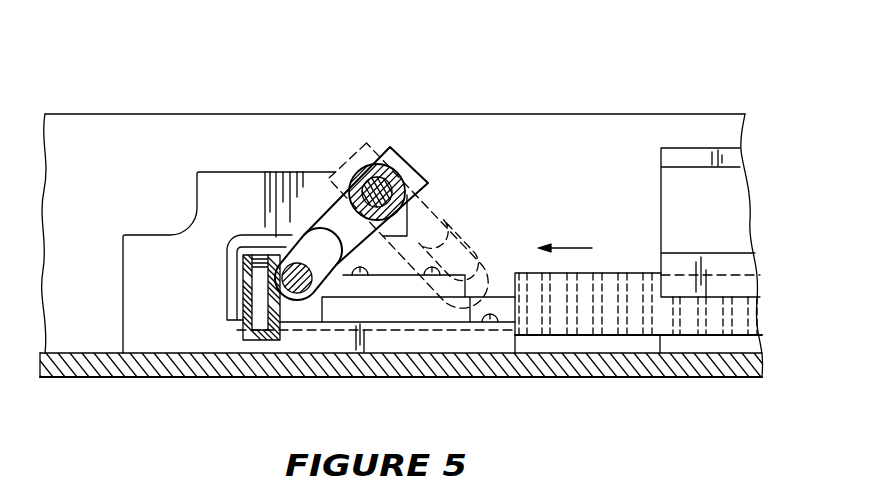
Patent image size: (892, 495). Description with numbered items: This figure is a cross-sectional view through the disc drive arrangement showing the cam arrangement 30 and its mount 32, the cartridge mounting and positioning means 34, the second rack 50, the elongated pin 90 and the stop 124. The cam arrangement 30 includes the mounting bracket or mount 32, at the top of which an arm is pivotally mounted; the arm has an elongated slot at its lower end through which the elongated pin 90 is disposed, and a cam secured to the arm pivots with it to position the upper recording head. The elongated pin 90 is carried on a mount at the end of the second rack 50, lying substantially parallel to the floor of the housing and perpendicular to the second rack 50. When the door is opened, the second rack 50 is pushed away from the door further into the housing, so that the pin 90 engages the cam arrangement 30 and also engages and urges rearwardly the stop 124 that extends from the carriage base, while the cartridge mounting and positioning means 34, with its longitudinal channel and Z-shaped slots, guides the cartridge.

The cam arrangement 30 is at (407, 108).
The mount 32 is at (193, 207).
The cartridge mounting and positioning means 34 is at (661, 117).
The second rack 50 is at (640, 277).
The elongated pin 90 is at (283, 233).
The stop 124 is at (243, 296).